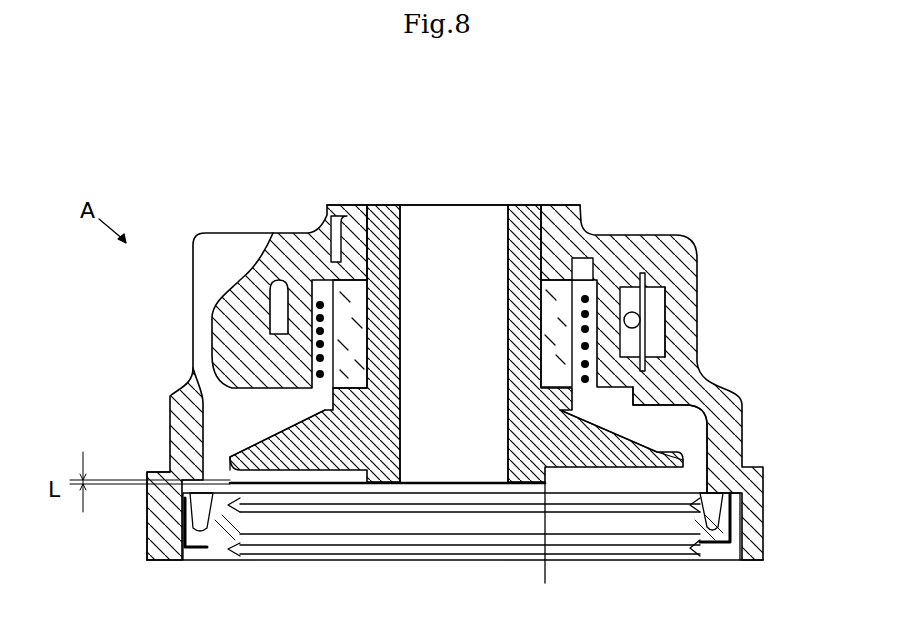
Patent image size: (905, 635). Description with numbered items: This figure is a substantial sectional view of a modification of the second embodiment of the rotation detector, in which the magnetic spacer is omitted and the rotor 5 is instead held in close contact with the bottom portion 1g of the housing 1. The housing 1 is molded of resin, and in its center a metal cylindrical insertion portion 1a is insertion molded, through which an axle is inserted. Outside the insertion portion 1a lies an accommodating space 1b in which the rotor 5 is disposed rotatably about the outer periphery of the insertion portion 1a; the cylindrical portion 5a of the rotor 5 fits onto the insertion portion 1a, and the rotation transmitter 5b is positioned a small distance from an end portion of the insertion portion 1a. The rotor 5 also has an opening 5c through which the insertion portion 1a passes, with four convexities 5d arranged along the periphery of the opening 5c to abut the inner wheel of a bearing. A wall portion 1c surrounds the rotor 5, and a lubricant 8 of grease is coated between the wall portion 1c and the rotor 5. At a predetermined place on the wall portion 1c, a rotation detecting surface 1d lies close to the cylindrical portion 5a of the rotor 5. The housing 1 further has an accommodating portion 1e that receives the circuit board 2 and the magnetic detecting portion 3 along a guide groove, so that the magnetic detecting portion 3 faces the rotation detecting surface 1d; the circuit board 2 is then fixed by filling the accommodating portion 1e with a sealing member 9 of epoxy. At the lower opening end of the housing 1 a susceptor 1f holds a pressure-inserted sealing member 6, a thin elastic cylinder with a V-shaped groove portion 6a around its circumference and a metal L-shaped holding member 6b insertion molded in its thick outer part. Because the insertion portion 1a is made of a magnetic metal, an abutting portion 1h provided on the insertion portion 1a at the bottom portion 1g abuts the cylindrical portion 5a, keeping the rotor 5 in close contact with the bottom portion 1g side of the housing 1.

The housing 1 is at (672, 258).
The insertion portion 1a is at (388, 407).
The accommodating space 1b is at (686, 428).
The wall portion 1c is at (292, 349).
The rotation detecting surface 1d is at (598, 296).
The accommodating portion 1e is at (667, 334).
The susceptor 1f is at (158, 472).
The bottom portion 1g is at (316, 240).
The abutting portion 1h is at (557, 268).
The circuit board 2 is at (644, 291).
The magnetic detecting portion 3 is at (636, 318).
The rotor 5 is at (249, 434).
The cylindrical portion 5a is at (348, 359).
The rotation transmitter 5b is at (315, 472).
The opening 5c is at (550, 298).
The convexities 5d is at (360, 470).
The sealing member 6 is at (632, 553).
The groove portion 6a is at (720, 513).
The holding member 6b is at (733, 527).
The lubricant 8 is at (312, 306).
The sealing member 9 is at (652, 350).